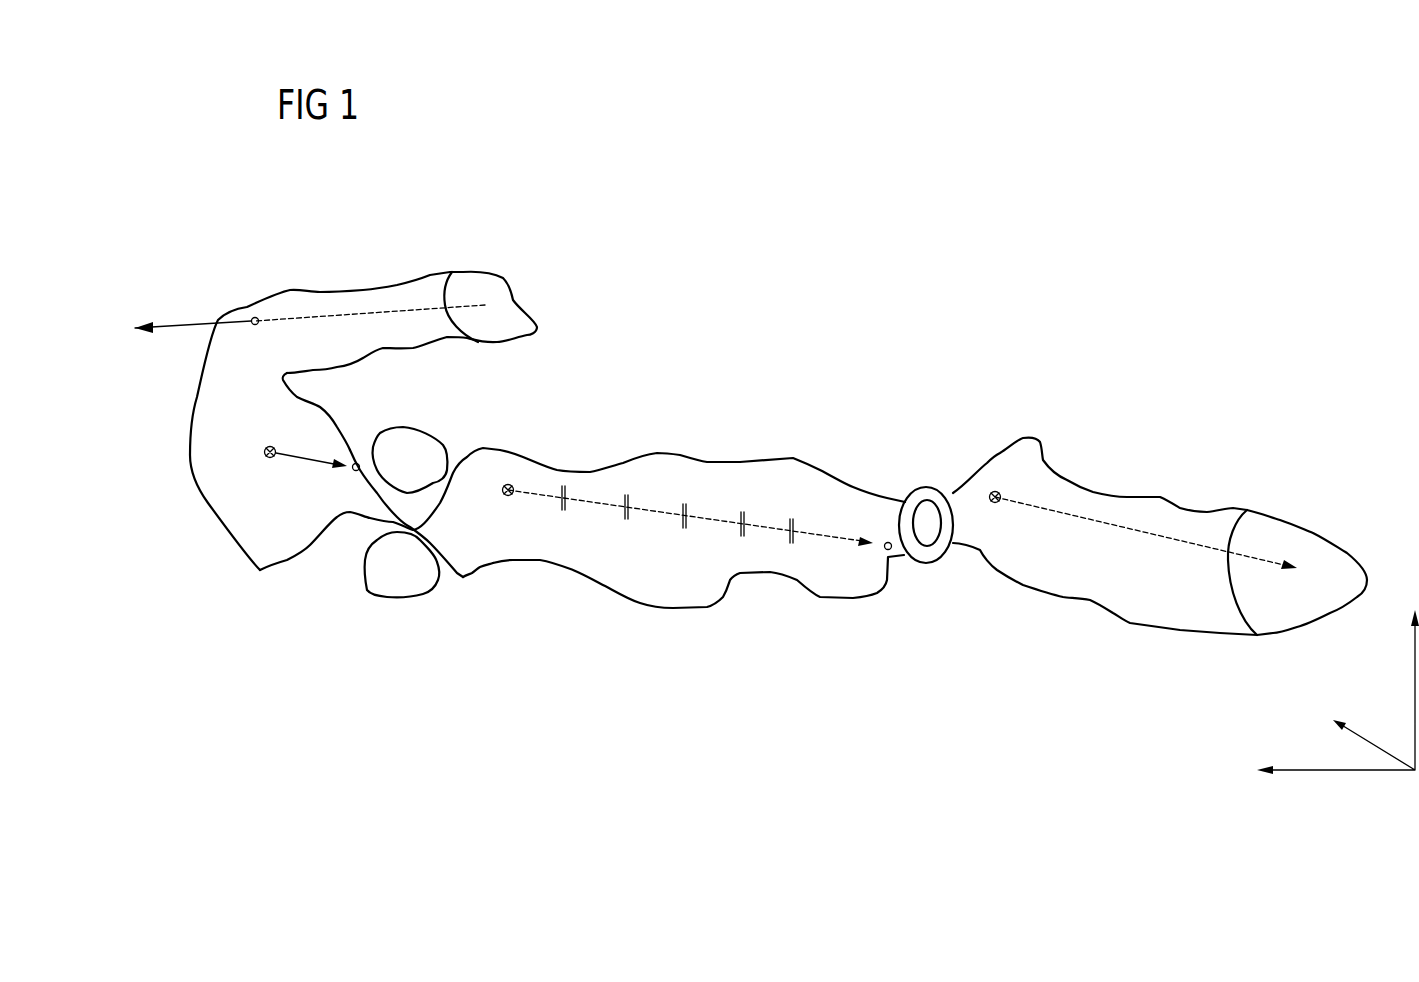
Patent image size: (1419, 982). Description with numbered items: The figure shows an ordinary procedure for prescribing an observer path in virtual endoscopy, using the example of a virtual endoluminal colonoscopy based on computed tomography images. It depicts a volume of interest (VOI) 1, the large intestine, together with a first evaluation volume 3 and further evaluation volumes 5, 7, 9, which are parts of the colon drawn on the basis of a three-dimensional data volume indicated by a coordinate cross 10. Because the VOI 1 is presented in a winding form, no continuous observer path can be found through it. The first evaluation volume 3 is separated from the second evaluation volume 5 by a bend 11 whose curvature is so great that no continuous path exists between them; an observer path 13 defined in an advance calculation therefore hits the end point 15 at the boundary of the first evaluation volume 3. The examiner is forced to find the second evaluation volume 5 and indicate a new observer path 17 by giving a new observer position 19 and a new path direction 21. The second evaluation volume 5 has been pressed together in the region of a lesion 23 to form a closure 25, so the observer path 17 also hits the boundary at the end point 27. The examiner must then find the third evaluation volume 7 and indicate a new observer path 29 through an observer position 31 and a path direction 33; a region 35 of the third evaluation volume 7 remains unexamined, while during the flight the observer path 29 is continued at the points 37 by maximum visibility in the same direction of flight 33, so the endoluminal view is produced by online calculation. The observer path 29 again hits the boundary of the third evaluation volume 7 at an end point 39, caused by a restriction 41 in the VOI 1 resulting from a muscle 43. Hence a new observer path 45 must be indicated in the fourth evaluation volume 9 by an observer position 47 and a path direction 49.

The volume of interest (VOI) 1 is at (918, 288).
The first evaluation volume 3 is at (388, 285).
The second evaluation volume 5 is at (197, 473).
The third evaluation volume 7 is at (735, 460).
The fourth evaluation volume 9 is at (1095, 492).
The coordinate system 10 is at (1381, 703).
The bend 11 is at (293, 385).
The observer path 13 is at (325, 315).
The end point 15 is at (255, 316).
The new observer path 17 is at (297, 462).
The new observer position 19 is at (264, 446).
The new path direction 21 is at (330, 461).
The lesion 23 is at (423, 433).
The closure 25 is at (393, 520).
The end point 27 is at (360, 463).
The new observer path 29 is at (532, 495).
The observer position 31 is at (510, 484).
The path direction 33 is at (872, 538).
The region 35 is at (472, 540).
The points 37 is at (565, 512).
The end point 39 is at (888, 550).
The restriction 41 is at (935, 530).
The muscle 43 is at (932, 488).
The new observer path 45 is at (1110, 527).
The observer position 47 is at (995, 510).
The path direction 49 is at (1285, 560).